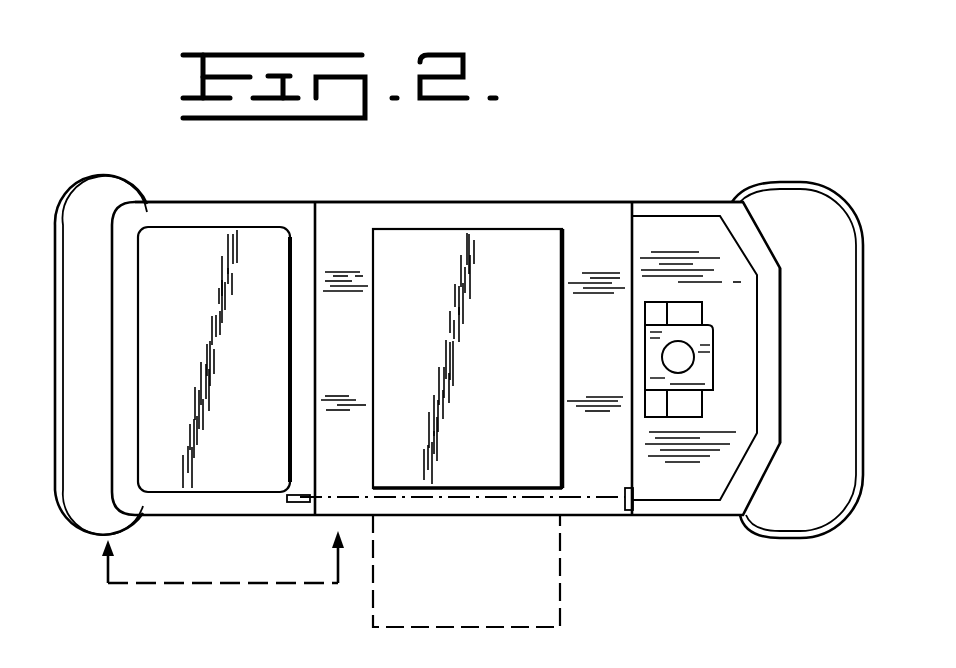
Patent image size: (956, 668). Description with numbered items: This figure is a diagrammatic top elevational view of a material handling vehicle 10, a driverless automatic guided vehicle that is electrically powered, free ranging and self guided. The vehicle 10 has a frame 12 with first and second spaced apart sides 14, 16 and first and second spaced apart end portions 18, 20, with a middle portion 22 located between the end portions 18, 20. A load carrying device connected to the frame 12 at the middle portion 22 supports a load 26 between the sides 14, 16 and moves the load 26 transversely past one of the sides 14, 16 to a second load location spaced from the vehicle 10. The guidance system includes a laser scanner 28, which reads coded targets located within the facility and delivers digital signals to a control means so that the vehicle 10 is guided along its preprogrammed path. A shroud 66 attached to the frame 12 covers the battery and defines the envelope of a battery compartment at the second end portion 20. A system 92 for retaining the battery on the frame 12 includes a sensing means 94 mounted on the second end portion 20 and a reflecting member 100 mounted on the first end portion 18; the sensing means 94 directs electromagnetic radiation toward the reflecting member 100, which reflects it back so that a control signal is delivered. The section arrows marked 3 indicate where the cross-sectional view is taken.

The material handling vehicle 10 is at (720, 68).
The frame 12 is at (776, 410).
The first side 14 is at (640, 517).
The second side 16 is at (590, 202).
The first end portion 18 is at (745, 360).
The second end portion 20 is at (146, 342).
The middle portion 22 is at (478, 216).
The load 26 is at (522, 374).
The laser scanner 28 is at (712, 328).
The shroud 66 is at (242, 478).
The system for retaining the battery 92 is at (383, 548).
The sensing means 94 is at (297, 503).
The reflecting member 100 is at (628, 512).
The section line 3- 3 is at (222, 579).